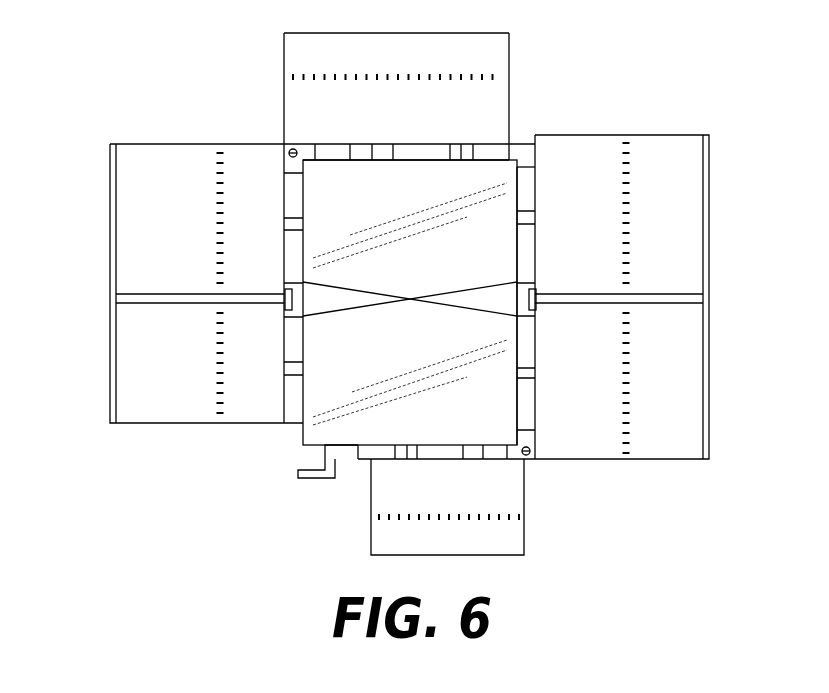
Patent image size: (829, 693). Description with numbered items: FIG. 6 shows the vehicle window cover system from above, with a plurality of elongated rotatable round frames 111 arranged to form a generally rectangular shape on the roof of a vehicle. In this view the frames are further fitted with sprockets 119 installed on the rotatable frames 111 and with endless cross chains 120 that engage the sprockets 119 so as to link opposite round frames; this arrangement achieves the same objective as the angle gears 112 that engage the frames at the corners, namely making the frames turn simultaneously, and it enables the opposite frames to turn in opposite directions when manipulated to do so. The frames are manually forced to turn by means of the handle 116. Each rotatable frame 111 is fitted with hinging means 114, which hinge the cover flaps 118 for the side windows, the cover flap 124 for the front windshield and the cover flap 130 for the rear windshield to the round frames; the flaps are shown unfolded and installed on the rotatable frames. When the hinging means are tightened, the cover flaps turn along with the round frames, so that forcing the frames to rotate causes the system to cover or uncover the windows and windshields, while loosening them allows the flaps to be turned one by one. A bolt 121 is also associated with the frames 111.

The elongated rotatable round frame 111 is at (537, 187).
The angle gear 112 is at (293, 150).
The hinging means 114 is at (285, 370).
The handle 116 is at (298, 472).
The cover flap for side window 118 is at (167, 237).
The sprocket 119 is at (537, 292).
The endless cross chain 120 is at (480, 312).
The bolt 121 is at (537, 217).
The cover flap for front windshield 124 is at (523, 515).
The cover flap for rear windshield 130 is at (500, 77).